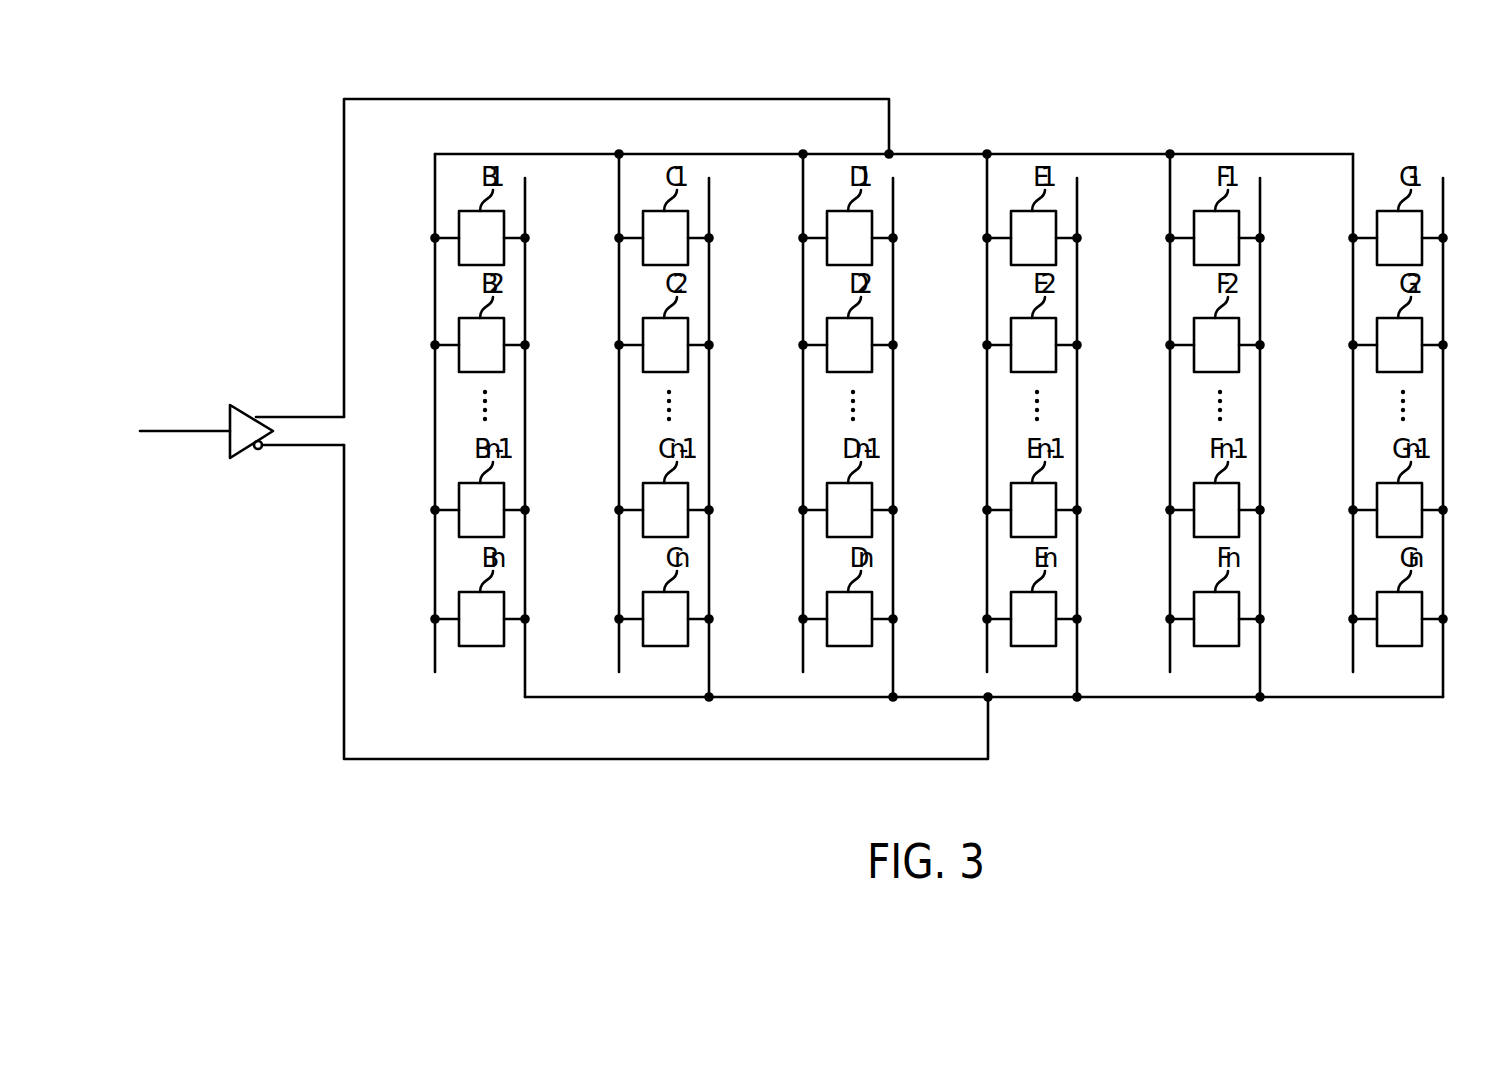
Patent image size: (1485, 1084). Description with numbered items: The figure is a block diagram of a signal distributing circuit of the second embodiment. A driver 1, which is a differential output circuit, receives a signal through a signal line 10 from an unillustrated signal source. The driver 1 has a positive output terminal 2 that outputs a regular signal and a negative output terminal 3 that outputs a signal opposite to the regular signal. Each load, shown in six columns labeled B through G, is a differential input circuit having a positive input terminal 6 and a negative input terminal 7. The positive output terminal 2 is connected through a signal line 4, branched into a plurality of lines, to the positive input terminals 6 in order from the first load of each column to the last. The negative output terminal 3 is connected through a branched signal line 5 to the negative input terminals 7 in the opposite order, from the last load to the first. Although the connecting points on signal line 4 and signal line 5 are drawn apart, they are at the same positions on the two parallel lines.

The driver 1 is at (236, 404).
The positive output terminal 2 is at (255, 415).
The negative output terminal 3 is at (262, 450).
The signal line 4 is at (626, 98).
The signal line 5 is at (707, 761).
The positive input terminal 6 is at (896, 413).
The negative input terminal 7 is at (981, 437).
The signal line 10 is at (207, 433).